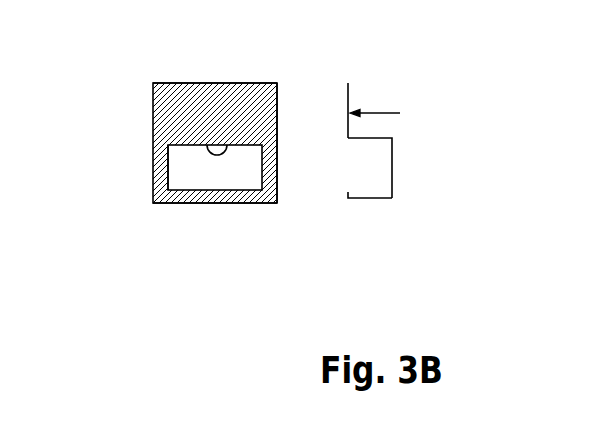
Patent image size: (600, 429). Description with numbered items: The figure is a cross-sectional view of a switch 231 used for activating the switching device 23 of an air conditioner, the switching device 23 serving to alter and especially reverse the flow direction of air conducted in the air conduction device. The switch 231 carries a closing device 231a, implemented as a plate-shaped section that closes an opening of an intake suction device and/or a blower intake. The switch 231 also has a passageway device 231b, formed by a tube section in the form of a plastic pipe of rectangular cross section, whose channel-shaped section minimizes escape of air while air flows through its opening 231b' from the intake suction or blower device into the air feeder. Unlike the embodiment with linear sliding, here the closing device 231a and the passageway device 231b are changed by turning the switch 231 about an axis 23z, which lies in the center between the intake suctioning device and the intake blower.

The switching device 23 is at (287, 248).
The axis 23z is at (184, 159).
The switch 231 is at (364, 209).
The closing device 231a is at (338, 108).
The passageway device 231b is at (334, 143).
The opening 231b' is at (142, 200).